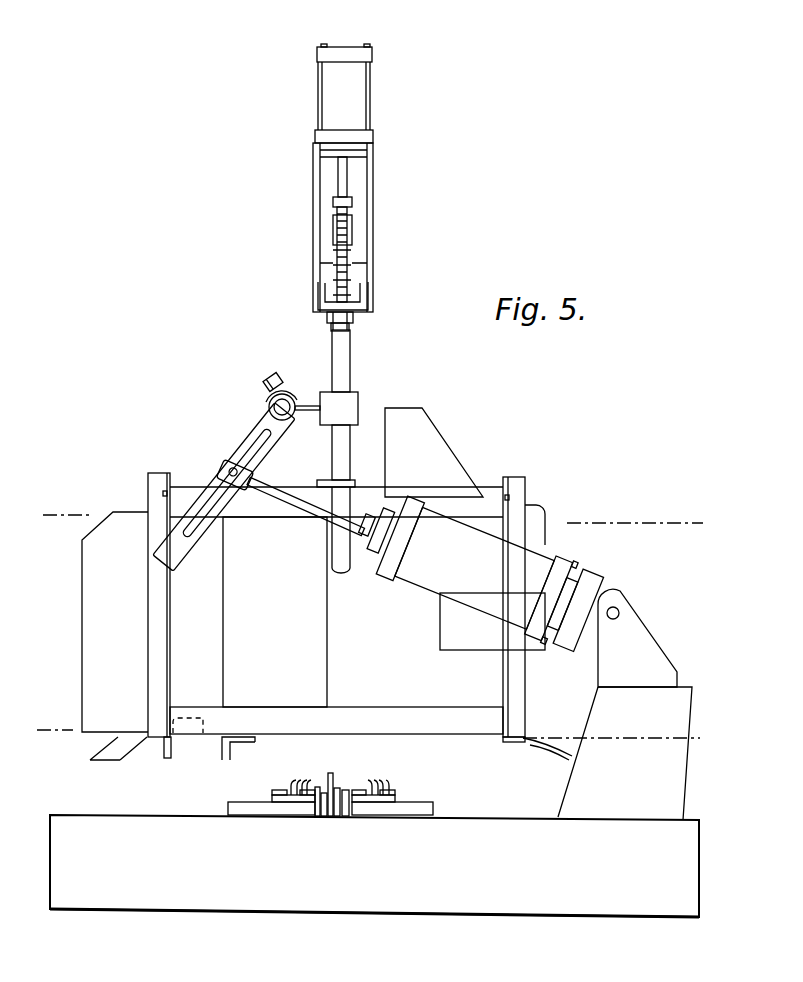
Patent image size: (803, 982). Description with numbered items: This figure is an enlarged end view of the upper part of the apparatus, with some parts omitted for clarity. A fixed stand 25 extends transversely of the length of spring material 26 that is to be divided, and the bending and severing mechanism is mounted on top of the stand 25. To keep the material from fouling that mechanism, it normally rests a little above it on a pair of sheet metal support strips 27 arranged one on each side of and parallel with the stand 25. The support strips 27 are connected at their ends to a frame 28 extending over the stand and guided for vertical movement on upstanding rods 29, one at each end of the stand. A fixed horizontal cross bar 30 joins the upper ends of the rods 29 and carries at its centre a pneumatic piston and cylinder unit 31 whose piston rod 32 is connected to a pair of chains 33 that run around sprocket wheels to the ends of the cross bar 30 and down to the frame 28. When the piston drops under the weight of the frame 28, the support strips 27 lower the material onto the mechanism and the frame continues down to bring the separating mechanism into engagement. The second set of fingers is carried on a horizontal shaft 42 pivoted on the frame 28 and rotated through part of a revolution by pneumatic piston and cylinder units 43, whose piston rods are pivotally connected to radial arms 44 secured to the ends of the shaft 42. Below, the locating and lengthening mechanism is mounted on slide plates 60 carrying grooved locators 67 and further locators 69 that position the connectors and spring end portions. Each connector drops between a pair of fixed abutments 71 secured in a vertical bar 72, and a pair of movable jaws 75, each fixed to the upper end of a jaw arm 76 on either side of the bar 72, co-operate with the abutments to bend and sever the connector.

The fixed stand 25 is at (290, 910).
The length of spring material 26 is at (608, 518).
The sheet metal support strips 27 is at (132, 727).
The frame 28 is at (445, 470).
The upstanding rods 29 is at (348, 355).
The cross bar 30 is at (372, 306).
The pneumatic piston and cylinder unit 31 is at (348, 100).
The piston rod 32 is at (348, 180).
The chains 33 is at (350, 232).
The horizontal shaft 42 is at (275, 405).
The pneumatic piston and cylinder units 43 is at (435, 575).
The radial arms 44 is at (248, 446).
The slide plates 60 is at (433, 808).
The locators 67 is at (303, 795).
The locators 69 is at (292, 795).
The fixed abutments 71 is at (332, 790).
The bar 72 is at (332, 818).
The movable jaws 75 is at (318, 816).
The jaw arms 76 is at (338, 818).